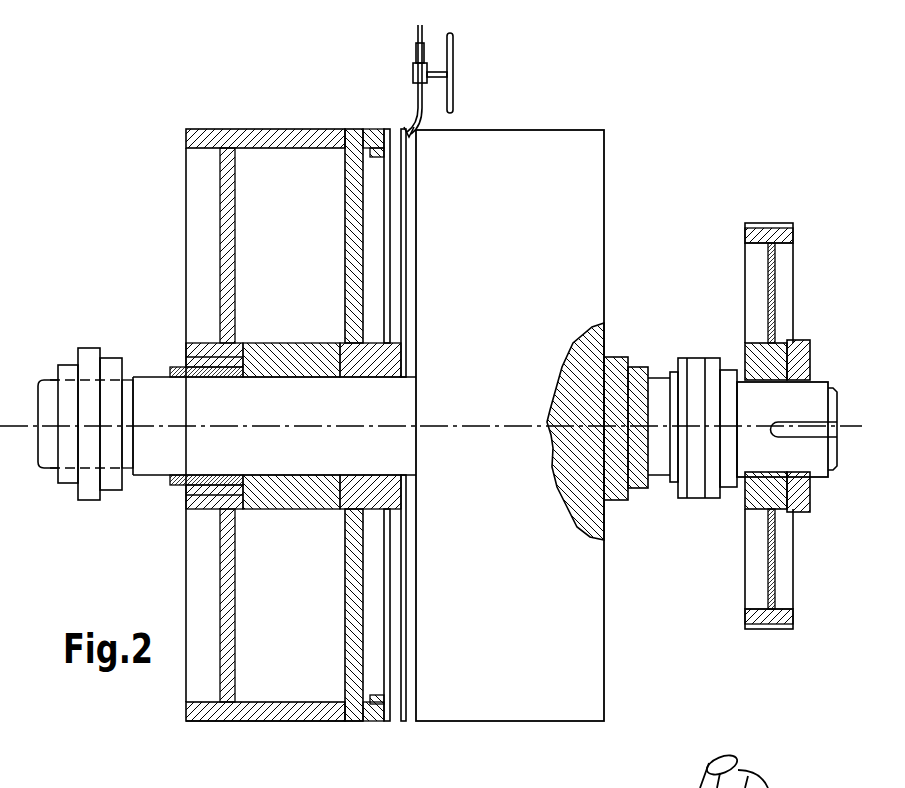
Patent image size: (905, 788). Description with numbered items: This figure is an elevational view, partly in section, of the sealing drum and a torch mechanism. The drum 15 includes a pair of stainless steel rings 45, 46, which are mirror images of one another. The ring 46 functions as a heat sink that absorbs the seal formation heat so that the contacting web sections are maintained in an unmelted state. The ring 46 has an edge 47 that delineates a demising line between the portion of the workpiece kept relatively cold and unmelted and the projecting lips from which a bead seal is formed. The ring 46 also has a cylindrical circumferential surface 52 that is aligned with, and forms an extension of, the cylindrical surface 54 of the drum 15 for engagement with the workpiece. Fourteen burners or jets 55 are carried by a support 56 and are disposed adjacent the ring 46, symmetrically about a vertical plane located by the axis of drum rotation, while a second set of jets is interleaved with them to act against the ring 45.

The drum 15 is at (285, 712).
The stainless steel ring 45 is at (545, 173).
The stainless steel ring 46 is at (389, 128).
The edge 47 is at (407, 128).
The cylindrical circumferential surface 52 is at (362, 128).
The cylindrical surface 54 is at (245, 128).
The burners or jets 55 is at (420, 125).
The support 56 is at (452, 48).